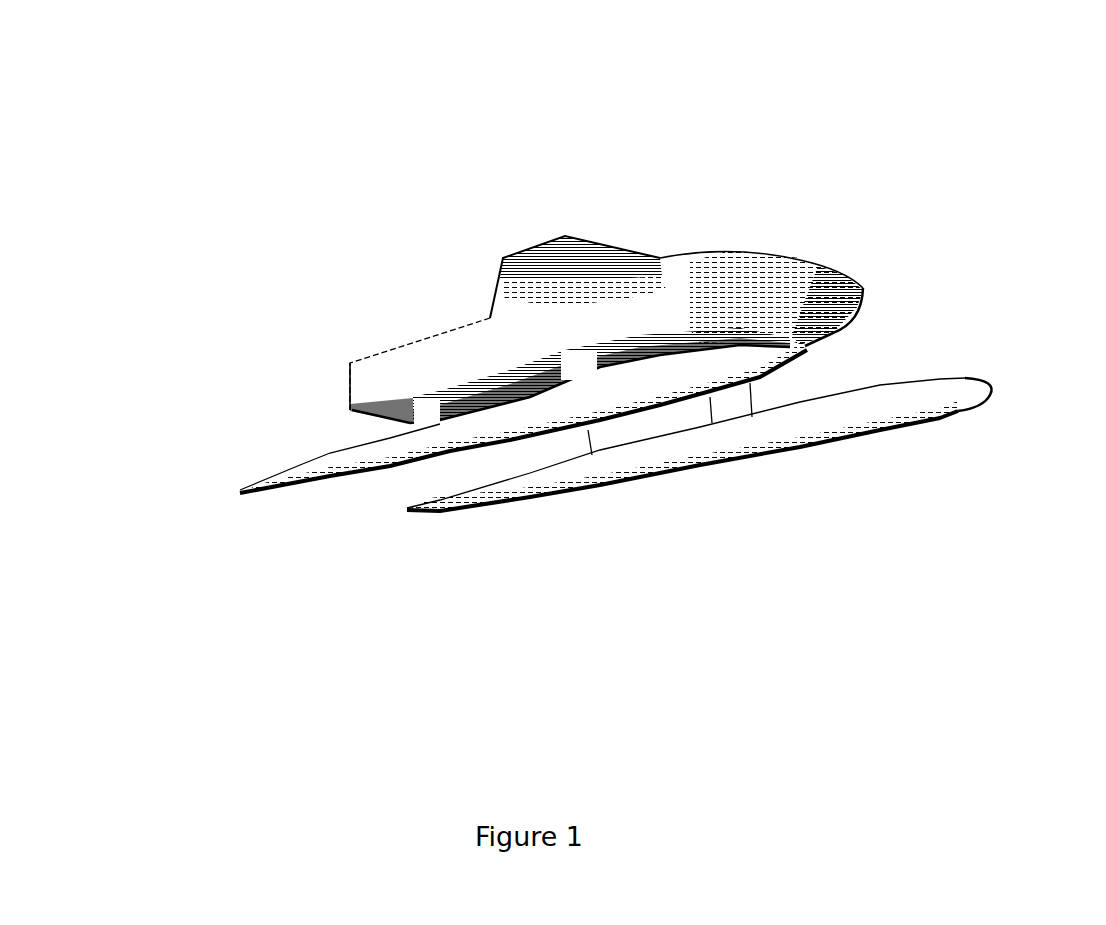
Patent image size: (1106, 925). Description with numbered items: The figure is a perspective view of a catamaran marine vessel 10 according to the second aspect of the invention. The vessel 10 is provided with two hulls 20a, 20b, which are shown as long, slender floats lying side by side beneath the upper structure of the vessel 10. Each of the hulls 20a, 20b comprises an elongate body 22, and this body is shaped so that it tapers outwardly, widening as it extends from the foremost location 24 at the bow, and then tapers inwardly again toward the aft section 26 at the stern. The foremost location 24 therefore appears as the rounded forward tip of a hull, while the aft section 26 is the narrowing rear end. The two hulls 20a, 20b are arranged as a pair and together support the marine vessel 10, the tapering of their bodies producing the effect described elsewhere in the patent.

The marine vessel 10 is at (944, 87).
The hull 20a is at (933, 381).
The hull 20b is at (784, 342).
The elongate body 22 is at (747, 428).
The foremost location 24 is at (992, 385).
The aft section 26 is at (297, 491).